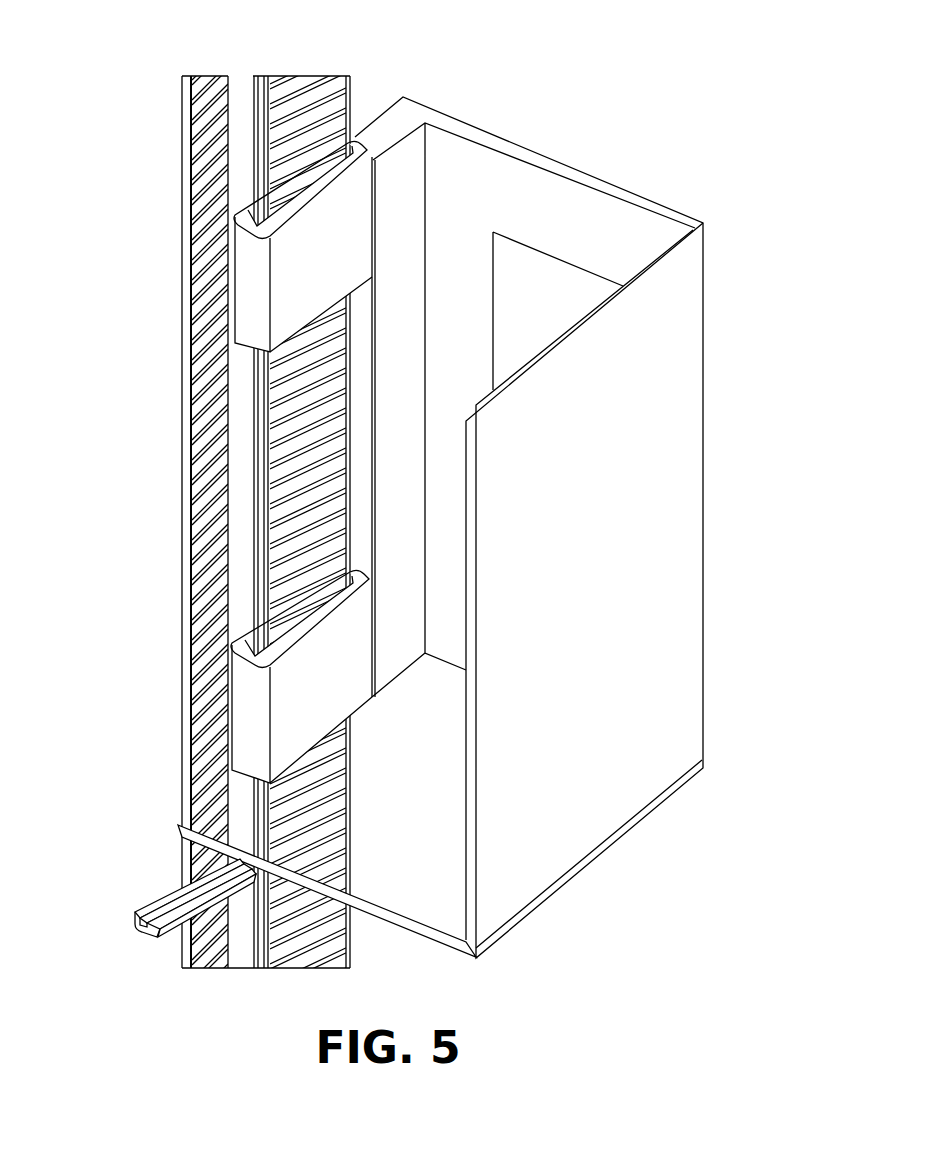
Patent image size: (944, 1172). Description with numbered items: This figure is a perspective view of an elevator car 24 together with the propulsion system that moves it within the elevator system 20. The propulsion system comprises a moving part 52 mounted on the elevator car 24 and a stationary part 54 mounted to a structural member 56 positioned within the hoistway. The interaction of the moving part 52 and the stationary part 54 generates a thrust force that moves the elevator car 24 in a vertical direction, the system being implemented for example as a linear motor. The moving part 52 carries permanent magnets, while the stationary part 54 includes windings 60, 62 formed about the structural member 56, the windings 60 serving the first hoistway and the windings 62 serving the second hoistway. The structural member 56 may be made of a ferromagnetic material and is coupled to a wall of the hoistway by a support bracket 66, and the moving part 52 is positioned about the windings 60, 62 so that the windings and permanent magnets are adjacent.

The elevator system 20 is at (422, 531).
The elevator car 24 is at (706, 395).
The moving part 52 is at (360, 187).
The stationary part 54 is at (192, 358).
The structural member 56 is at (165, 856).
The windings 60 is at (316, 462).
The windings 62 is at (207, 243).
The support bracket 66 is at (135, 923).